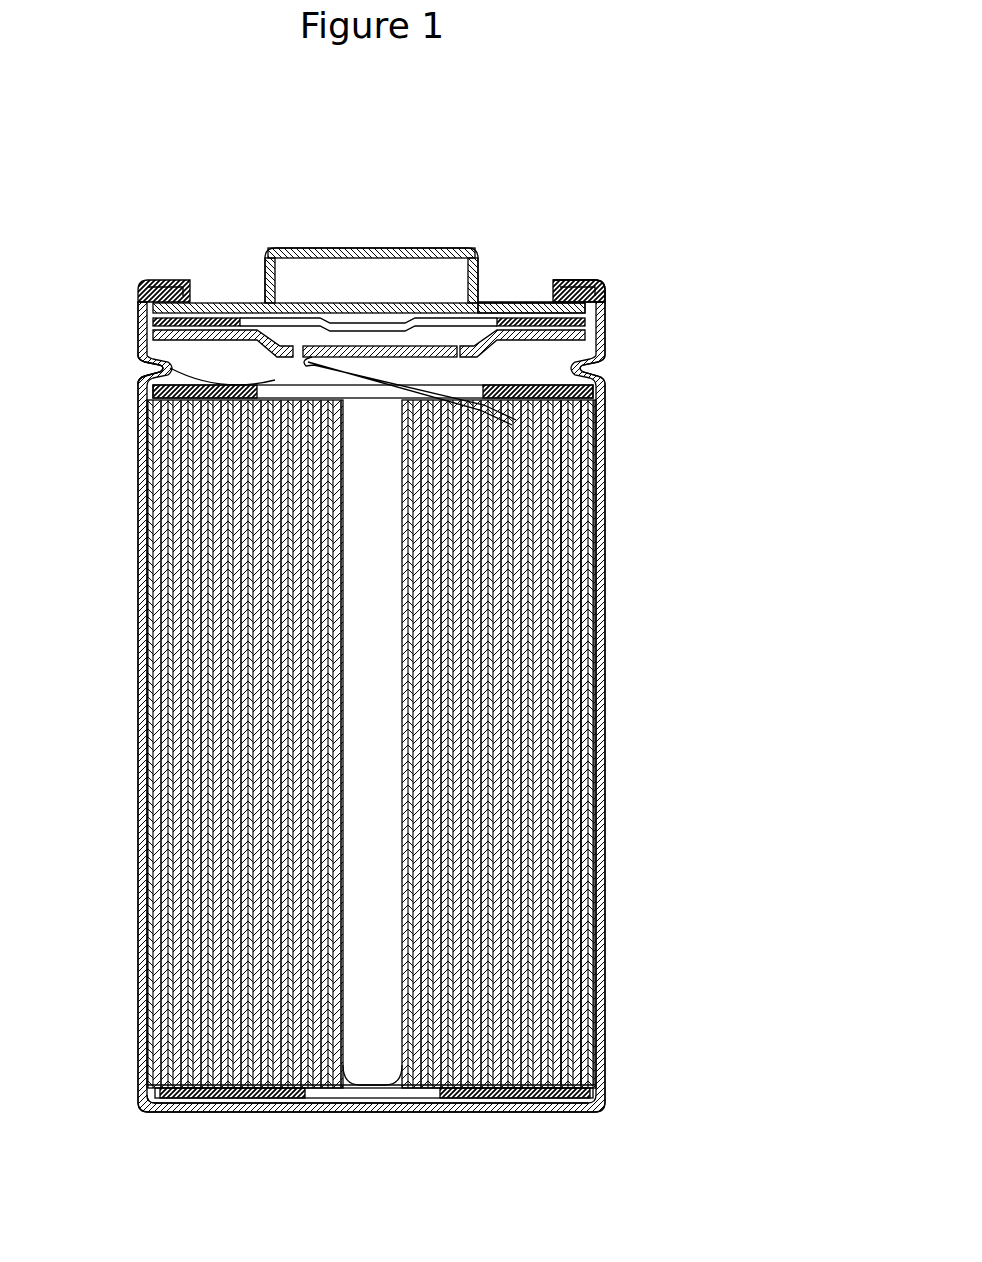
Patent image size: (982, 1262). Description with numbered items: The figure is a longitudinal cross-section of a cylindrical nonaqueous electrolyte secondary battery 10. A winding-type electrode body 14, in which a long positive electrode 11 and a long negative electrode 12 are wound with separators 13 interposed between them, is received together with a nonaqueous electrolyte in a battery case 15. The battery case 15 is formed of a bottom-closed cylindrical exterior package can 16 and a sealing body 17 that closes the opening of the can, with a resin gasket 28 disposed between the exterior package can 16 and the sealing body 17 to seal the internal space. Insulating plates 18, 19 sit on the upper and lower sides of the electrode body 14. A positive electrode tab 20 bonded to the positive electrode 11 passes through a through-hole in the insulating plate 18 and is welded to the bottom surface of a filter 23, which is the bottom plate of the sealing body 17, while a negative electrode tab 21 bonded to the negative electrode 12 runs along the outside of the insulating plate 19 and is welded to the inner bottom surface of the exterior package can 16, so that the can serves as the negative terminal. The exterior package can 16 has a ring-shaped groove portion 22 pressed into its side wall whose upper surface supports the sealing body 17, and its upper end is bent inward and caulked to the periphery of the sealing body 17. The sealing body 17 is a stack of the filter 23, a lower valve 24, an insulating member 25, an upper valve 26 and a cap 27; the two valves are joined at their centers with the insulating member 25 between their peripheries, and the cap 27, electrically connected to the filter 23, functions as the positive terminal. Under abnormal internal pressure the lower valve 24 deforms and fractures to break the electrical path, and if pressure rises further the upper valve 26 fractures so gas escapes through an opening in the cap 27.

The nonaqueous electrolyte secondary battery 10 is at (616, 124).
The positive electrode 11 is at (568, 815).
The negative electrode 12 is at (582, 838).
The separator 13 is at (592, 860).
The electrode body 14 is at (697, 797).
The battery case 15 is at (500, 197).
The exterior package can 16 is at (576, 282).
The sealing body 17 is at (508, 302).
The insulating plate 18 is at (592, 393).
The insulating plate 19 is at (592, 1092).
The positive electrode tab 20 is at (140, 350).
The negative electrode tab 21 is at (165, 1090).
The groove portion 22 is at (142, 378).
The filter 23 is at (372, 346).
The lower valve 24 is at (278, 318).
The insulating member 25 is at (218, 303).
The upper valve 26 is at (303, 330).
The cap 27 is at (442, 248).
The gasket 28 is at (605, 298).